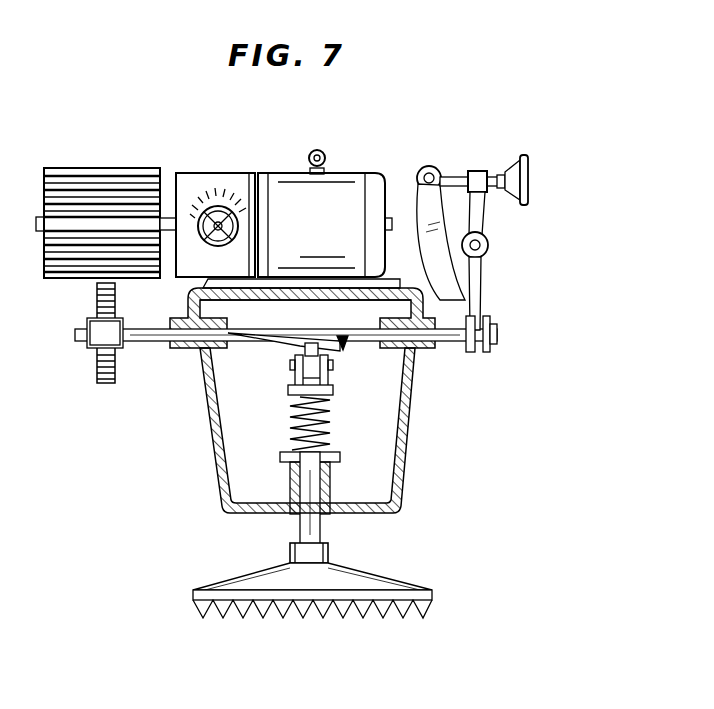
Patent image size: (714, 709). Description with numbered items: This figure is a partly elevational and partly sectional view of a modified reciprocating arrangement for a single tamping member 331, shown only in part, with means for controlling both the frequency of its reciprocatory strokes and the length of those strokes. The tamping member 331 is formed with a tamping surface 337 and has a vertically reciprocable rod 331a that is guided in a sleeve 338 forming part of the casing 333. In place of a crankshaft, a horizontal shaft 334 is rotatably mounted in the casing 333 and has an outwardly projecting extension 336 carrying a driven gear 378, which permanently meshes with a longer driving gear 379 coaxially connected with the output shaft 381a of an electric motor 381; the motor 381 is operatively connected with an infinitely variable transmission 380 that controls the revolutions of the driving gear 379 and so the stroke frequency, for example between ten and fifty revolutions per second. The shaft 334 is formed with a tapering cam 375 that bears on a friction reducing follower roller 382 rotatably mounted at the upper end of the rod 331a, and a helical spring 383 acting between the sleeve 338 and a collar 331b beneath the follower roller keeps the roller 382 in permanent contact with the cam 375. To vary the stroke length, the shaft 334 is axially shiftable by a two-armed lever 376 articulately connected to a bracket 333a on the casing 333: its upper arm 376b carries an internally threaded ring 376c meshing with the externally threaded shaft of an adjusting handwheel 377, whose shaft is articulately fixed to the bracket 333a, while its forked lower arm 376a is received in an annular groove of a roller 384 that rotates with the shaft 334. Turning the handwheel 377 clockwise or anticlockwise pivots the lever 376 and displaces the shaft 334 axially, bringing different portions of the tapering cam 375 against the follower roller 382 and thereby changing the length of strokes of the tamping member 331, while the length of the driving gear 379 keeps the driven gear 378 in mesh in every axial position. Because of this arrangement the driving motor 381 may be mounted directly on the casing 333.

The driving gear 379 is at (101, 170).
The output shaft 381a is at (172, 218).
The infinitely variable transmission 380 is at (213, 192).
The electric motor 381 is at (346, 190).
The bracket 333a is at (446, 268).
The extension 336 is at (150, 343).
The driven gear 378 is at (103, 388).
The horizontal shaft 334 is at (254, 333).
The tapering cam 375 is at (343, 351).
The follower roller 382 is at (296, 372).
The collar 331b is at (291, 393).
The helical spring 383 is at (293, 430).
The sleeve 338 is at (331, 484).
The rod 331a is at (320, 540).
The casing 333 is at (405, 484).
The tamping member 331 is at (268, 580).
The tamping surface 337 is at (250, 612).
The two-armed lever 376 is at (483, 226).
The lower arm 376a is at (482, 296).
The upper arm 376b is at (480, 222).
The internally threaded ring 376c is at (478, 172).
The adjusting handwheel 377 is at (524, 158).
The roller 384 is at (470, 353).